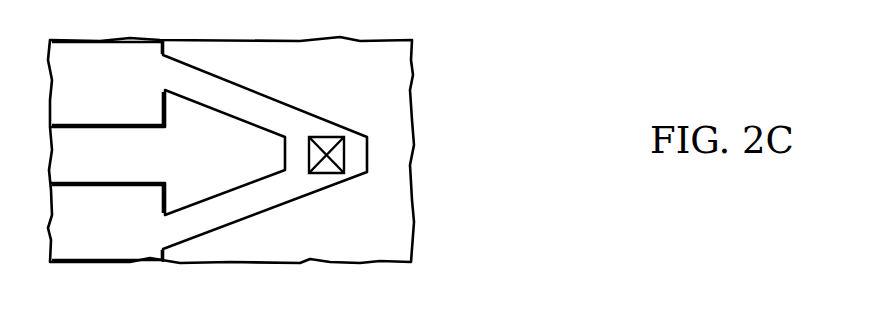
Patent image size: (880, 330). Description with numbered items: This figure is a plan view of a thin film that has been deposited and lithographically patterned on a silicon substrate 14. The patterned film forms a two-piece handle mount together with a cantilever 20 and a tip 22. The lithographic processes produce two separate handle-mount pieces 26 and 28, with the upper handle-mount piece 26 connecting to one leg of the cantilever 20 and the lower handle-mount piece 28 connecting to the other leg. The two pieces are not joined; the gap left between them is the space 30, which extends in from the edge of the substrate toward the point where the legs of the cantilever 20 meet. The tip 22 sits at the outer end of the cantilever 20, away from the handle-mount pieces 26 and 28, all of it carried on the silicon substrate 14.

The silicon substrate 14 is at (415, 117).
The cantilever 20 is at (243, 97).
The tip 22 is at (334, 141).
The handle-mount piece 26 is at (101, 72).
The handle-mount piece 28 is at (103, 237).
The space between handle-mount pieces 30 is at (112, 162).